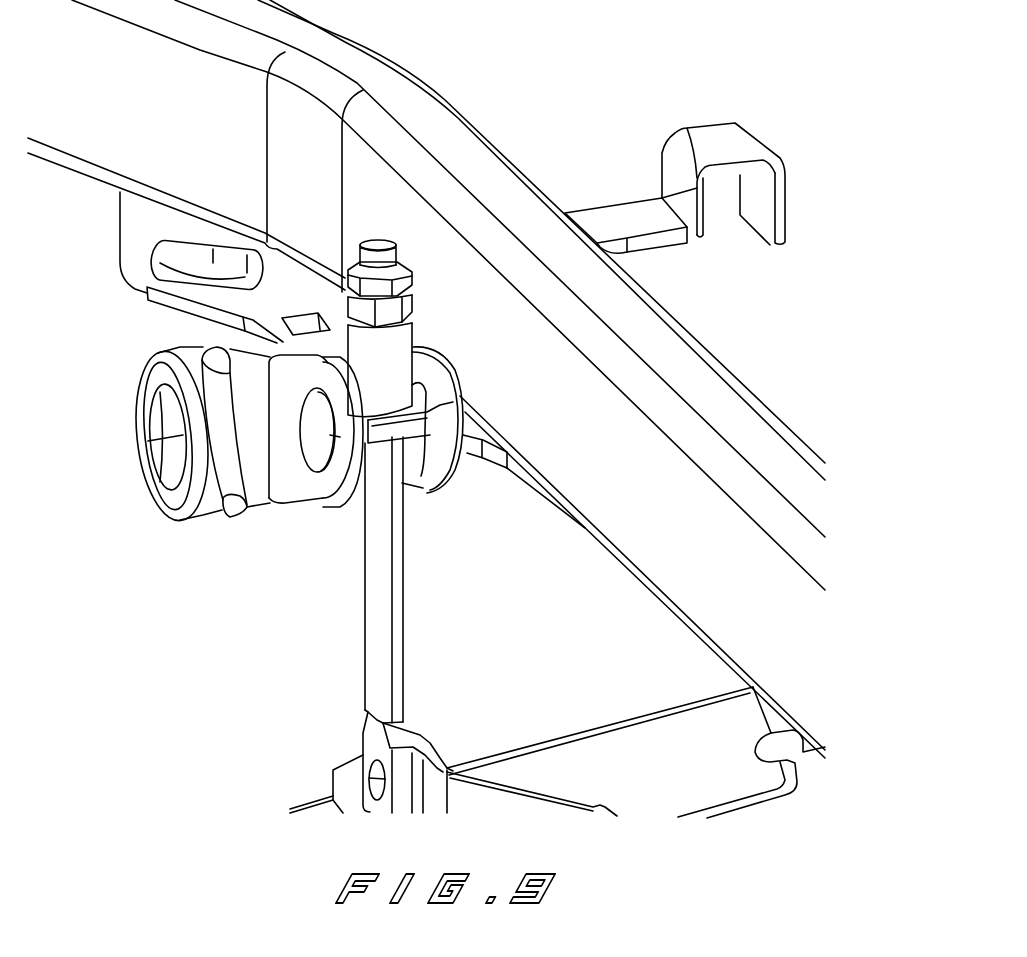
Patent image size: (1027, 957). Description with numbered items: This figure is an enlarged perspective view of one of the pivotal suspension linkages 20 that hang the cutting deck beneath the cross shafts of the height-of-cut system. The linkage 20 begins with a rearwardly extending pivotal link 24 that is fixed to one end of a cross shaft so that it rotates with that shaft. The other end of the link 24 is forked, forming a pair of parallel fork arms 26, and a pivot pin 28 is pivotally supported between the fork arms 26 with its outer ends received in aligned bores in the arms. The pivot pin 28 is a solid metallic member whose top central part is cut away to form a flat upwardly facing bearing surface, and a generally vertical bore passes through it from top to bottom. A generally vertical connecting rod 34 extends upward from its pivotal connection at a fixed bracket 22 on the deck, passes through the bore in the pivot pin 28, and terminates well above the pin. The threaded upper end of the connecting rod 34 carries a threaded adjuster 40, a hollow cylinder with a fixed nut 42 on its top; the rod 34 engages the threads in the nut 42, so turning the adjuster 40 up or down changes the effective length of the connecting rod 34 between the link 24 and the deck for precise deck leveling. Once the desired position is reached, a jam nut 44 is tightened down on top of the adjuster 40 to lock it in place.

The pivotal suspension linkage 20 is at (380, 218).
The fixed bracket 22 is at (430, 745).
The pivotal link 24 is at (195, 355).
The fork arms 26 is at (320, 488).
The pivot pin 28 is at (316, 440).
The connecting rod 34 is at (364, 660).
The threaded adjuster 40 is at (400, 358).
The fixed nut 42 is at (400, 312).
The jam nut 44 is at (408, 285).